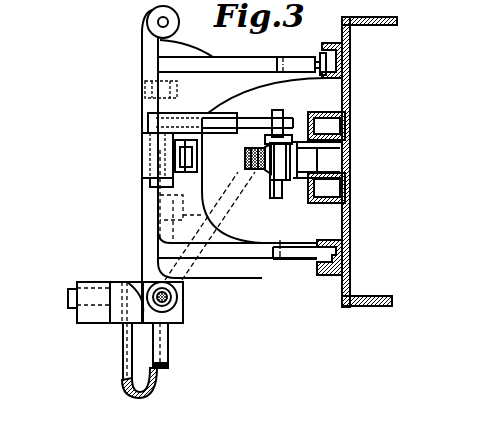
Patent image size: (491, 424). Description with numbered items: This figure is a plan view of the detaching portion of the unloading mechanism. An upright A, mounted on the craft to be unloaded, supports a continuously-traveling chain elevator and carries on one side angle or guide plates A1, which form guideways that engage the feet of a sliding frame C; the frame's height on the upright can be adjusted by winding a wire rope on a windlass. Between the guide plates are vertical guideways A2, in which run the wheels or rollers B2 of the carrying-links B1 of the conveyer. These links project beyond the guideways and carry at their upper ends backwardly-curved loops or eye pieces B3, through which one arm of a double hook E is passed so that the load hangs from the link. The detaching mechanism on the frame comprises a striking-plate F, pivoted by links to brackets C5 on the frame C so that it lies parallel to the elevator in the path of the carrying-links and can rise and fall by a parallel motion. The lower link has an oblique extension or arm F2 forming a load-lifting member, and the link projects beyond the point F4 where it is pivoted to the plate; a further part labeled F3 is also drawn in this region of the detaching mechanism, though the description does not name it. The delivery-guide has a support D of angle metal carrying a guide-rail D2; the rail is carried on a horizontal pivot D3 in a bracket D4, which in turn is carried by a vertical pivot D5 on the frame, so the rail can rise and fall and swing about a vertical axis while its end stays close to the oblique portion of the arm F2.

The upright A is at (346, 160).
The angle or guide plates A1 is at (312, 270).
The vertical guideways A2 is at (326, 112).
The carrying-links B1 is at (326, 187).
The wheels or rollers B2 is at (326, 133).
The backwardly-curved loops or eye pieces B3 is at (298, 180).
The sliding frame C is at (243, 287).
The brackets C5 is at (150, 138).
The support of angle metal D is at (142, 352).
The guide-rail D2 is at (167, 347).
The horizontal pivot D3 is at (72, 302).
The bracket D4 is at (123, 305).
The vertical pivot D5 is at (177, 292).
The double hook E is at (255, 172).
The striking-plate F is at (264, 160).
The extension or arm F2 is at (262, 175).
The slide F3 is at (155, 228).
The pivot point F4 is at (247, 111).